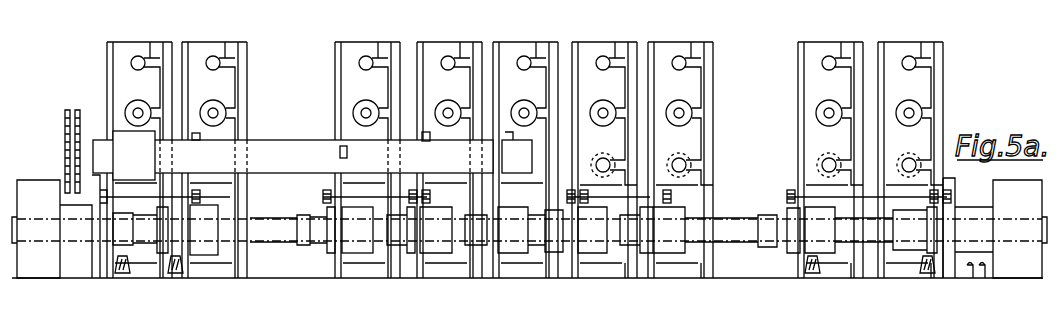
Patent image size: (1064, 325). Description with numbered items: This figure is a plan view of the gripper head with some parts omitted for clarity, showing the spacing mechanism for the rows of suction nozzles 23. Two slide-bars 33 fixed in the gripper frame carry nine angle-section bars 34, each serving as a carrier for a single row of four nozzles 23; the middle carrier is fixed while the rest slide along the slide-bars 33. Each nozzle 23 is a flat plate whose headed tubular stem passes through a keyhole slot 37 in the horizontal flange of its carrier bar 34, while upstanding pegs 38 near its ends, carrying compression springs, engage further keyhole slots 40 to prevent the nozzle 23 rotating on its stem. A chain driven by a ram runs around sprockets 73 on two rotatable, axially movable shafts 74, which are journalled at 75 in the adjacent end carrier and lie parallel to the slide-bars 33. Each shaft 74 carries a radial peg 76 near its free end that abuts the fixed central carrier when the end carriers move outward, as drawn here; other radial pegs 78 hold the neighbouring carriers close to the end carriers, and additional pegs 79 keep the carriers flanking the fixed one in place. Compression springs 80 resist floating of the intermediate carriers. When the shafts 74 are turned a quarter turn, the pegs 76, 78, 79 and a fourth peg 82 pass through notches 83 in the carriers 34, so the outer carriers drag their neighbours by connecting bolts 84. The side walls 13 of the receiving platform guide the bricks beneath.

The side walls 13 is at (986, 270).
The suction nozzles 23 is at (163, 48).
The slide-bars 33 is at (733, 222).
The angle-section bars 34 is at (213, 48).
The keyhole slot 37 is at (228, 112).
The upstanding pegs 38 is at (131, 64).
The keyhole slots 40 is at (150, 45).
The sprockets 73 is at (66, 122).
The shafts 74 is at (282, 140).
The journal 75 is at (136, 163).
The radial peg 76 is at (517, 152).
The radial pegs 78 is at (195, 133).
The pegs 79 is at (428, 141).
The compression springs 80 is at (182, 257).
The fourth peg 82 is at (348, 155).
The notches 83 is at (380, 200).
The connecting bolts 84 is at (202, 196).